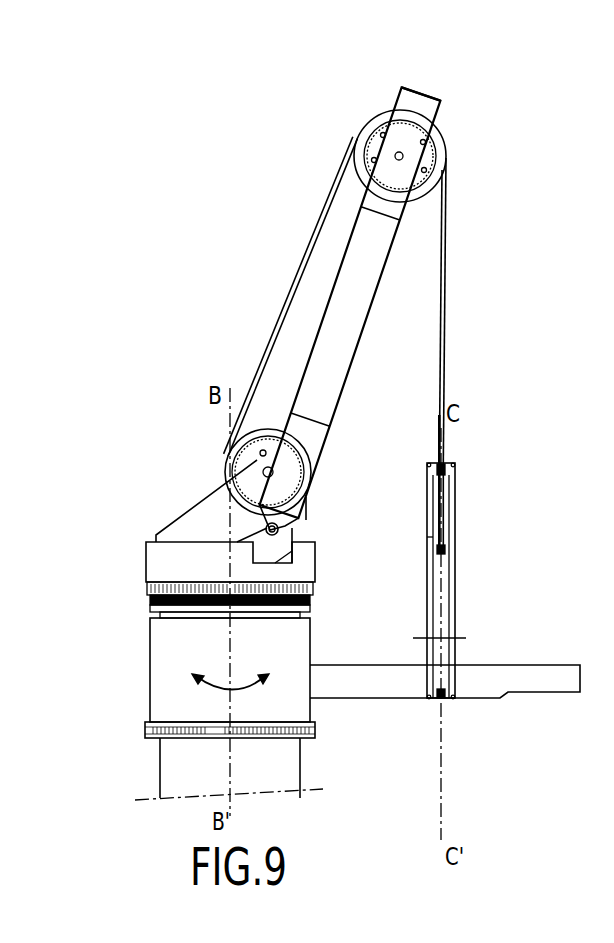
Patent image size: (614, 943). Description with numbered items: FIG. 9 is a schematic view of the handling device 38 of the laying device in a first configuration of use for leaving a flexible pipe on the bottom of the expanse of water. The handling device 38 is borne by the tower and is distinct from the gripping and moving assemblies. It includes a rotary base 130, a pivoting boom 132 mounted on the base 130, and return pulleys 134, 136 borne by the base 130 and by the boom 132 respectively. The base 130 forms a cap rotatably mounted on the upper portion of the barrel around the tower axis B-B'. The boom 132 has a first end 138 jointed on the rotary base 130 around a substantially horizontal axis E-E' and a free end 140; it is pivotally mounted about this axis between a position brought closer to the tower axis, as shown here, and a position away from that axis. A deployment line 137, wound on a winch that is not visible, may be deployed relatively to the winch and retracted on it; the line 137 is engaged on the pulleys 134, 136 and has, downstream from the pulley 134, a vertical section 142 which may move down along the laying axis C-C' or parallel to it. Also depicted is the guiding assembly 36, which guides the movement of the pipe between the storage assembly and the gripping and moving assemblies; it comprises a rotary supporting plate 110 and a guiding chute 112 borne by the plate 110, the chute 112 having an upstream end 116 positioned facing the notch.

The guiding assembly 36 is at (542, 708).
The handling device 38 is at (215, 283).
The rotary supporting plate 110 is at (525, 652).
The guiding chute 112 is at (458, 488).
The upstream end 116 is at (445, 701).
The rotary base 130 is at (148, 563).
The pivoting boom 132 is at (356, 310).
The return pulley 134 is at (235, 456).
The return pulley 136 is at (372, 121).
The deployment line 137 is at (302, 267).
The first end 138 is at (300, 508).
The free end 140 is at (418, 100).
The vertical section 142 is at (445, 351).